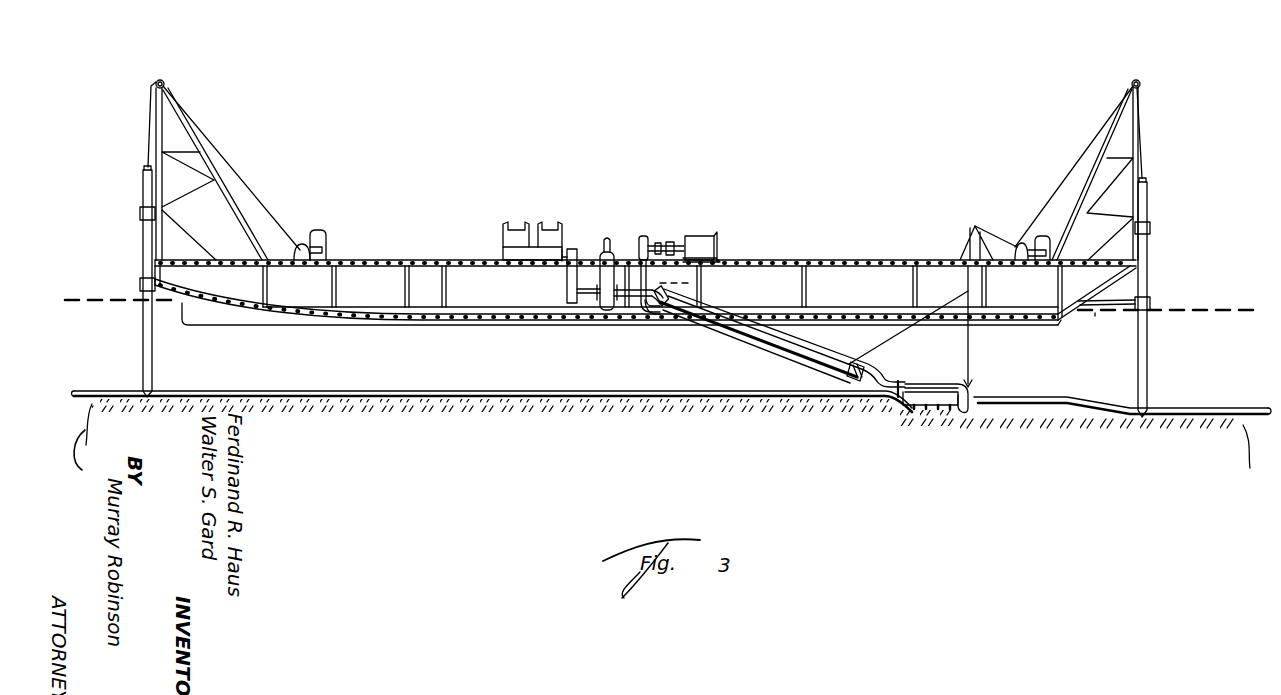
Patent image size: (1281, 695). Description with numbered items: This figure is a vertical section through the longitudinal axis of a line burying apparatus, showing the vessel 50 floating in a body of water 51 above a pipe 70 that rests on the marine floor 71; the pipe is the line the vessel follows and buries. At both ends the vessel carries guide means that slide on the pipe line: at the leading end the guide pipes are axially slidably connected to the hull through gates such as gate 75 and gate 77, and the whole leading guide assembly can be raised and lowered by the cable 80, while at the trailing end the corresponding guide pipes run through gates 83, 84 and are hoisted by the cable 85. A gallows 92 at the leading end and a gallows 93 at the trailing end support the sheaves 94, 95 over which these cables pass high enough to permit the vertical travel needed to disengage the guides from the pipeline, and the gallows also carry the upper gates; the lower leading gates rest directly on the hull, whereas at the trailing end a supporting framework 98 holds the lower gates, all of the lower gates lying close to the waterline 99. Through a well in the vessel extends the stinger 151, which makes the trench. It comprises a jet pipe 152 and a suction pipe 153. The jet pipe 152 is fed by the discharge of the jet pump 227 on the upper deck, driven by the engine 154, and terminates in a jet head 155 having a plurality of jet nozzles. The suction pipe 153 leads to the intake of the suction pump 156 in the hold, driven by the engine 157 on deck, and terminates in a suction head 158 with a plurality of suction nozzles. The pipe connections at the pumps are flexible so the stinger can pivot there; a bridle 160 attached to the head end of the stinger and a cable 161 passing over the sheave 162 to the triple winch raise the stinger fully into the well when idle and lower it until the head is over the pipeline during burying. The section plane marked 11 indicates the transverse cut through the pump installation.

The section line 11- 11 is at (617, 273).
The vessel 50 is at (452, 262).
The body of water 51 is at (100, 300).
The pipe 70 is at (516, 397).
The marine floor 71 is at (322, 397).
The gate 75 is at (140, 213).
The gate 77 is at (140, 284).
The cable 80 is at (205, 129).
The gate 83 is at (1150, 228).
The gate 84 is at (1150, 302).
The cable 85 is at (1090, 146).
The gallows 92 is at (238, 180).
The gallows 93 is at (1087, 194).
The sheave 94 is at (158, 82).
The sheave 95 is at (1133, 82).
The supporting framework 98 is at (1108, 314).
The waterline 99 is at (1242, 310).
The stinger 151 is at (842, 378).
The jet pipe 152 is at (805, 368).
The suction pipe 153 is at (796, 352).
The engine 154 is at (716, 250).
The jet head 155 is at (940, 412).
The suction pump 156 is at (606, 310).
The engine 157 is at (500, 215).
The suction head 158 is at (978, 412).
The bridle 160 is at (968, 352).
The cable 161 is at (991, 240).
The sheave 162 is at (973, 226).
The jet pump 227 is at (645, 234).